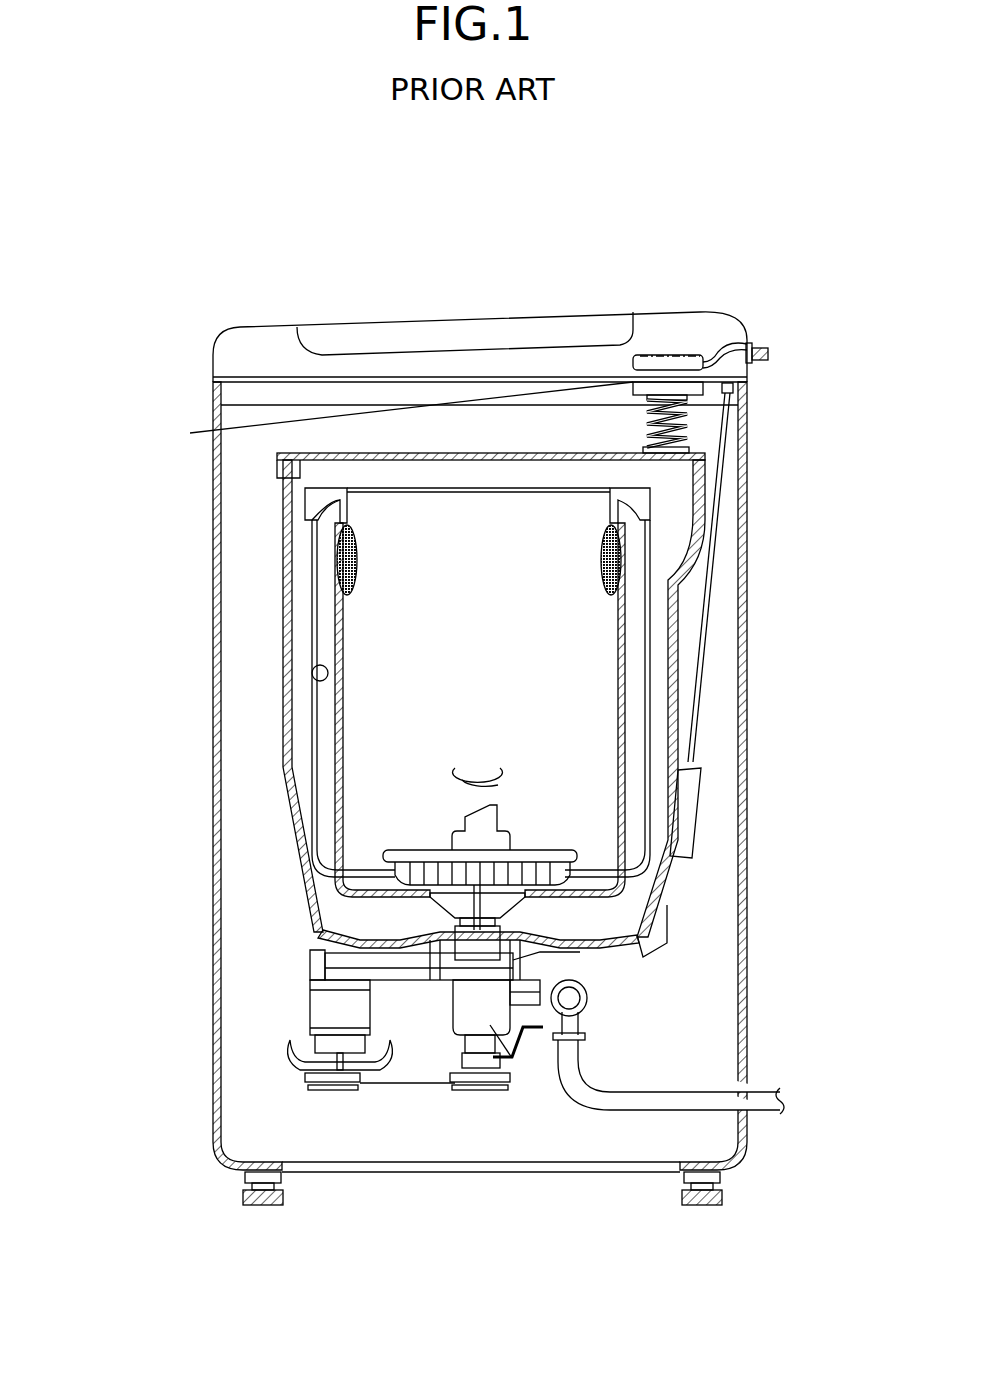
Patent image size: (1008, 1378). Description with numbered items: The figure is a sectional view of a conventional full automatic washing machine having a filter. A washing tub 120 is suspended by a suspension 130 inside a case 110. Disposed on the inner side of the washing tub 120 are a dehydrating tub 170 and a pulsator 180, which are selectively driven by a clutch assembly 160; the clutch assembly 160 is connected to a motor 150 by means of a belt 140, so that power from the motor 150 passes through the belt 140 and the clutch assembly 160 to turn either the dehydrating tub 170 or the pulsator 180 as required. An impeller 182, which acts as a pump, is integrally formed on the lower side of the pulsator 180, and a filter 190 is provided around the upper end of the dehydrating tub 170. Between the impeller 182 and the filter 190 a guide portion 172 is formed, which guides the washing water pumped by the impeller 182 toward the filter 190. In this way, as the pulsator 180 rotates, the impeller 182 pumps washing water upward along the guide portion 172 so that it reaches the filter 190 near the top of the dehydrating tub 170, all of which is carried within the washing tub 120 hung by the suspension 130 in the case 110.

The case 110 is at (747, 467).
The washing tub 120 is at (675, 620).
The suspension 130 is at (710, 575).
The belt 140 is at (410, 1087).
The motor 150 is at (327, 1008).
The clutch assembly 160 is at (522, 1077).
The dehydrating tub 170 is at (648, 723).
The guide portion 172 is at (313, 683).
The pulsator 180 is at (413, 855).
The impeller 182 is at (583, 900).
The filter 190 is at (337, 590).